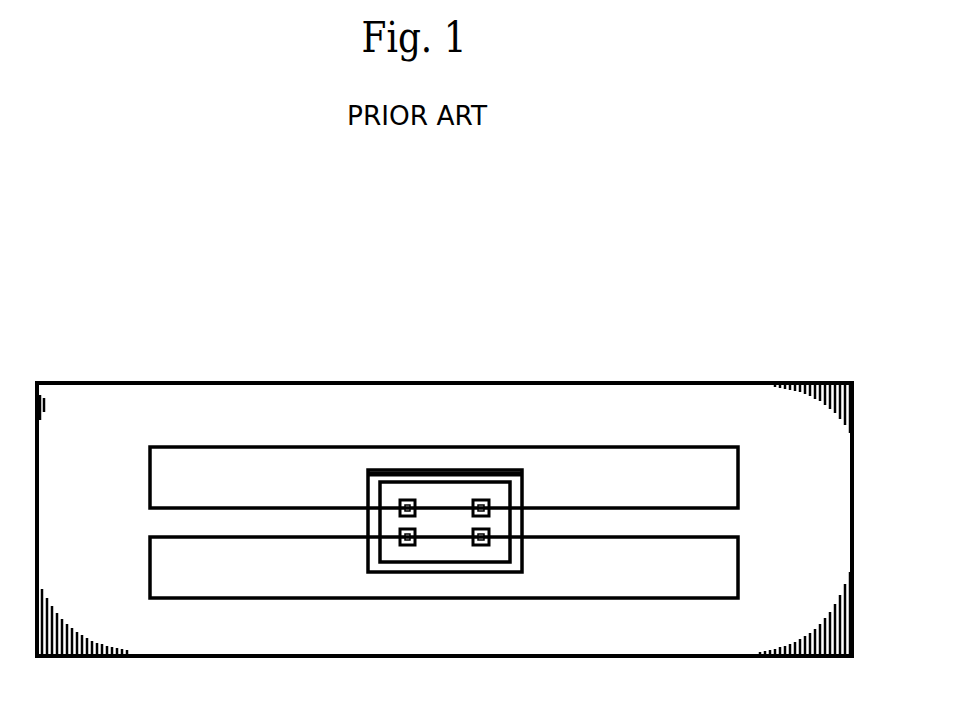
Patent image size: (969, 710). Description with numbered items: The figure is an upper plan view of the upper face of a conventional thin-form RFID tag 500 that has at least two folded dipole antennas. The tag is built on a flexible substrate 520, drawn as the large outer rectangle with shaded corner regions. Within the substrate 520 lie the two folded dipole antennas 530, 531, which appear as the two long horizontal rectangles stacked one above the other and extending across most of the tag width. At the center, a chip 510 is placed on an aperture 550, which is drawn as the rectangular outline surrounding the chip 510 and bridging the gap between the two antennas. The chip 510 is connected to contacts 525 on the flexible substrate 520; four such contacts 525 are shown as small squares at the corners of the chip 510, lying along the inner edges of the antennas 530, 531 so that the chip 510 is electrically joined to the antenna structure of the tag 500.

The thin RFID tag 500 is at (720, 363).
The chip 510 is at (441, 500).
The flexible substrate 520 is at (189, 394).
The contacts 525 is at (376, 498).
The folded dipole antenna 530 is at (738, 477).
The folded dipole antenna 531 is at (738, 560).
The aperture 550 is at (452, 575).